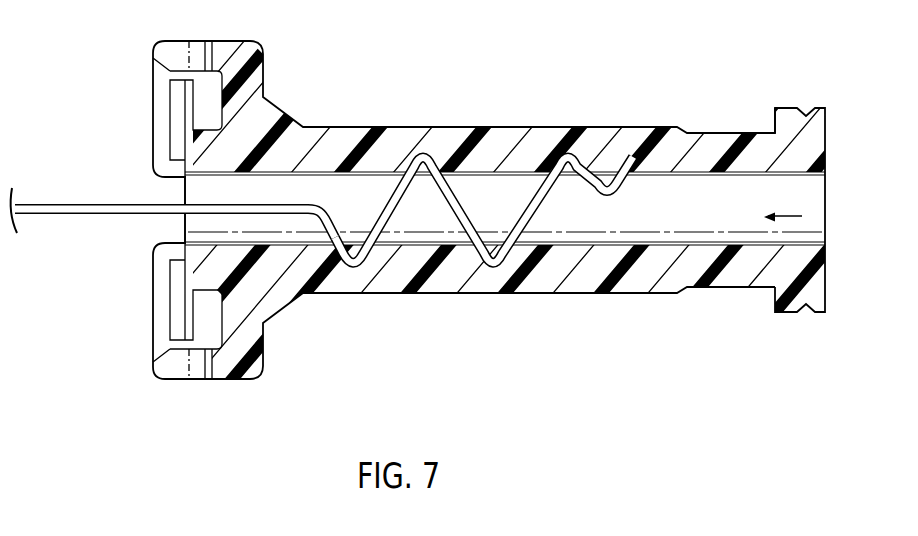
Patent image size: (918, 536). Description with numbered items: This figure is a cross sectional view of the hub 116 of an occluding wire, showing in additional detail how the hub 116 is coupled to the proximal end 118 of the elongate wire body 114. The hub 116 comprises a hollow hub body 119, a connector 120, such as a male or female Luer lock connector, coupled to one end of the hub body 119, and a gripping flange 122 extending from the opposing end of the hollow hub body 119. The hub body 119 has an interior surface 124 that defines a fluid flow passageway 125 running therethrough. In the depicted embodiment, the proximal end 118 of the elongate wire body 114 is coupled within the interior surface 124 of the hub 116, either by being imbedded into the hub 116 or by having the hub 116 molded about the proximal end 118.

The elongate wire body 114 is at (100, 214).
The hub 116 is at (350, 132).
The proximal end 118 is at (581, 158).
The hollow hub body 119 is at (443, 285).
The connector 120 is at (808, 297).
The gripping flange 122 is at (175, 370).
The interior surface 124 is at (795, 173).
The fluid flow passageway 125 is at (802, 216).